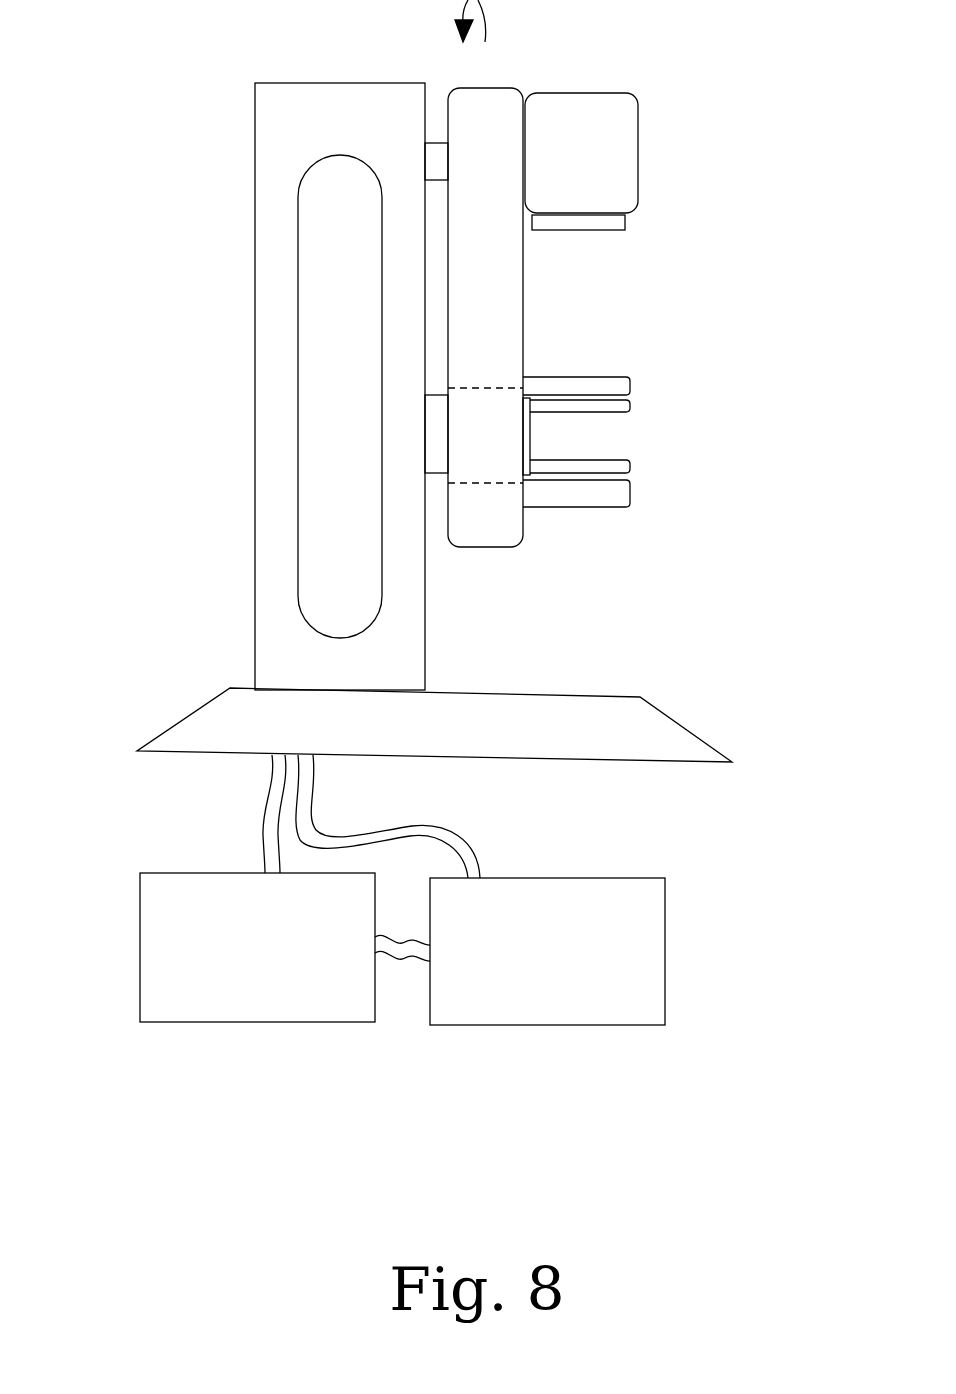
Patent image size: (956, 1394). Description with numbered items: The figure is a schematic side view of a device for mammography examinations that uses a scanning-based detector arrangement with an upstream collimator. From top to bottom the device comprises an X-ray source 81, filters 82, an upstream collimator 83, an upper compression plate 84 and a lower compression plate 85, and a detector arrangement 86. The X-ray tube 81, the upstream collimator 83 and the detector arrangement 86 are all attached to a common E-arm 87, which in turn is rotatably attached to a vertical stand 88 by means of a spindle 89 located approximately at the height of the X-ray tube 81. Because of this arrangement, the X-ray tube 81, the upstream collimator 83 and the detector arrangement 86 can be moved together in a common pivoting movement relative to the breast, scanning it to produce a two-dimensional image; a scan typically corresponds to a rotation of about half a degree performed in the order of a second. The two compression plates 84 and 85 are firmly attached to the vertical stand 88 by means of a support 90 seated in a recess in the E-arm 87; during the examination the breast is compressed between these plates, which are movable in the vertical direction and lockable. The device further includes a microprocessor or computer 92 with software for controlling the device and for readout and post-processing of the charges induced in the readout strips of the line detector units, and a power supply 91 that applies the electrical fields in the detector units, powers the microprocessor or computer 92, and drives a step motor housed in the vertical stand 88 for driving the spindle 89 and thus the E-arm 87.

The X-ray source 81 is at (638, 145).
The filters 82 is at (625, 222).
The upstream collimator 83 is at (630, 385).
The upper compression plate 84 is at (630, 412).
The lower compression plate 85 is at (630, 470).
The detector arrangement 86 is at (630, 495).
The E-arm 87 is at (478, 88).
The vertical stand 88 is at (425, 628).
The spindle 89 is at (440, 142).
The support 90 is at (530, 428).
The power supply 91 is at (665, 902).
The microprocessor or computer 92 is at (140, 895).